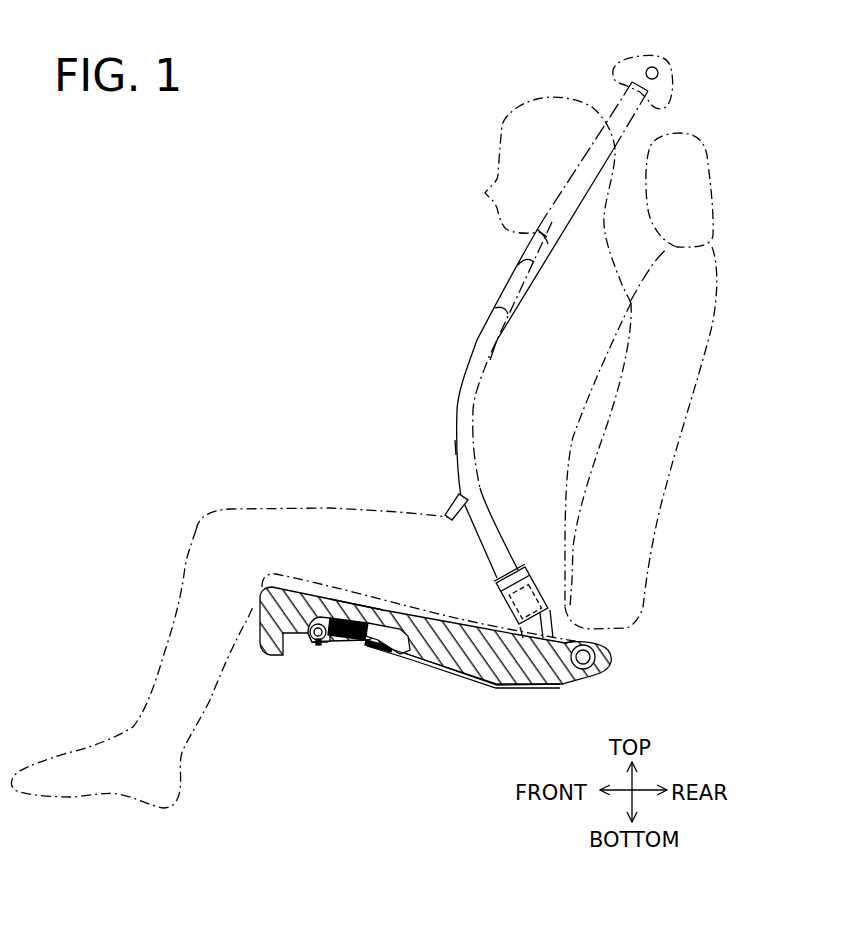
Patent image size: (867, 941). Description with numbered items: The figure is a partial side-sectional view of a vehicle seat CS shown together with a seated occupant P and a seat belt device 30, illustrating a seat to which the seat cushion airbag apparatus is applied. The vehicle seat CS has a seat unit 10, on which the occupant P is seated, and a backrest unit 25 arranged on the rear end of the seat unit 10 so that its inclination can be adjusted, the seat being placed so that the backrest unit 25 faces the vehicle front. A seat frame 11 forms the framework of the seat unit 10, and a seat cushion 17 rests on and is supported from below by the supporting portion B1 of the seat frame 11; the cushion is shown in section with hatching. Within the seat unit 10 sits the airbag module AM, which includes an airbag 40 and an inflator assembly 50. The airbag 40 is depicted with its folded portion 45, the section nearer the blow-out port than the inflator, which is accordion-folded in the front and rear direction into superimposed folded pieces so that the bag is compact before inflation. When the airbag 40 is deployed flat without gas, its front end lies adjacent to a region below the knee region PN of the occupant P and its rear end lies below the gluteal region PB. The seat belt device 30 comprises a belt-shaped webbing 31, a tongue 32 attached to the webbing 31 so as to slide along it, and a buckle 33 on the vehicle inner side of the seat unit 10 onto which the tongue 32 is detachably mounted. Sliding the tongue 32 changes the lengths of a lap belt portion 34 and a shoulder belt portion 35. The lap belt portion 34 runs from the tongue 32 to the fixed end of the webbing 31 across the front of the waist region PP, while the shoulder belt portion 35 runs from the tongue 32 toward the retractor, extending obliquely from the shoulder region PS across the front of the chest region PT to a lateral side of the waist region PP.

The occupant P is at (502, 126).
The shoulder region PS is at (521, 263).
The chest region PT is at (497, 310).
The waist region PP is at (587, 508).
The knee region PN is at (206, 520).
The gluteal region PB is at (570, 606).
The vehicle seat CS is at (648, 646).
The backrest unit (seat back) 25 is at (665, 518).
The seat belt device 30 is at (432, 398).
The webbing 31 is at (377, 445).
The shoulder belt portion 35 is at (455, 452).
The lap belt portion 34 is at (459, 497).
The tongue 32 is at (520, 566).
The buckle 33 is at (490, 602).
The seat unit (seat cushion) 10 is at (421, 608).
The seat cushion 17 is at (270, 606).
The inflator assembly 50 is at (320, 643).
The folded portion 45 is at (371, 620).
The airbag 40 is at (395, 611).
The seat frame 11 is at (366, 650).
The airbag module AM is at (337, 607).
The supporting portion B1 is at (483, 683).